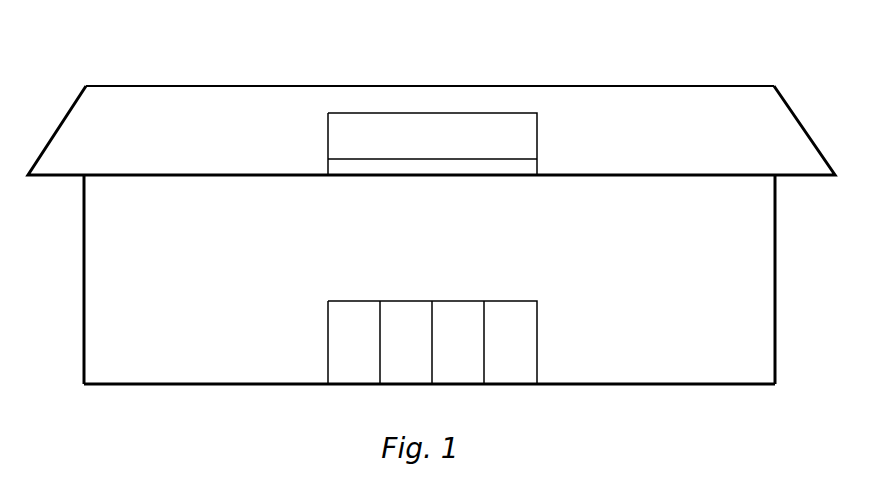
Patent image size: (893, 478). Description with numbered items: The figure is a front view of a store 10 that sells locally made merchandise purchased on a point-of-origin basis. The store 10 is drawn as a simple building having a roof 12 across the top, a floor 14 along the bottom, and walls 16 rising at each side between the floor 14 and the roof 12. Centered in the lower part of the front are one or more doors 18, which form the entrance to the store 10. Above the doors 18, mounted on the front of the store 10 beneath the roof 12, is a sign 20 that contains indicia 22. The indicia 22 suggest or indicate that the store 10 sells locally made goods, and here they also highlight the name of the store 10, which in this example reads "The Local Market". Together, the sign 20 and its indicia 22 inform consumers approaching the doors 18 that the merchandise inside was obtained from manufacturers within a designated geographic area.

The store 10 is at (706, 60).
The roof 12 is at (797, 117).
The floor 14 is at (727, 384).
The walls 16 is at (84, 284).
The doors 18 is at (397, 340).
The sign 20 is at (483, 112).
The indicia 22 is at (360, 130).